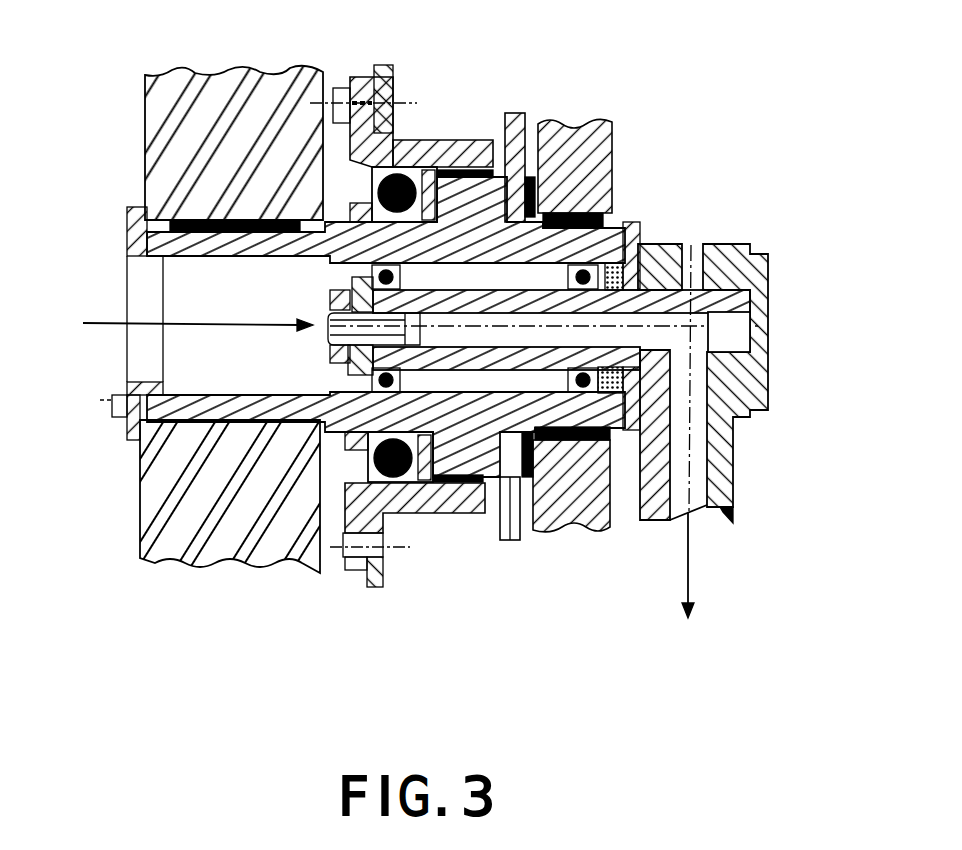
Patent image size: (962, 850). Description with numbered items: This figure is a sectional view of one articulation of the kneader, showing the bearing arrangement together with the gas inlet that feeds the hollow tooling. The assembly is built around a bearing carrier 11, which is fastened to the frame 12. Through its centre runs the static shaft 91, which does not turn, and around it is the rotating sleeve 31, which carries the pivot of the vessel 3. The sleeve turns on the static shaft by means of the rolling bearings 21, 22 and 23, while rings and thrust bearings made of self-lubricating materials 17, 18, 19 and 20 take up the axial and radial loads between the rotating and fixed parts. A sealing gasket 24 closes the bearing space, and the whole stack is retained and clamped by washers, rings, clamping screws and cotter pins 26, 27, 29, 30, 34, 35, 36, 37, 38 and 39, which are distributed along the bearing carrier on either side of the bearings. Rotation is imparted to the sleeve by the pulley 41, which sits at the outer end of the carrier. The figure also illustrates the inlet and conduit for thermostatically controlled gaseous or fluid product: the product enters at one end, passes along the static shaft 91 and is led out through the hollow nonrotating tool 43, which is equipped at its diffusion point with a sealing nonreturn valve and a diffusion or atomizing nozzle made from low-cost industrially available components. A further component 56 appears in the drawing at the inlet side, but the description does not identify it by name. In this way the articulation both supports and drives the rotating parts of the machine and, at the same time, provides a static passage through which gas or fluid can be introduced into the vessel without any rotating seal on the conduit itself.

The vessel 3 is at (510, 542).
The bearing carrier 11 is at (352, 558).
The frame 12 is at (375, 590).
The self-lubricating ring / thrust bearing 17 is at (632, 247).
The self-lubricating ring / thrust bearing 18 is at (517, 115).
The self-lubricating ring / thrust bearing 19 is at (462, 140).
The self-lubricating ring / thrust bearing 20 is at (427, 165).
The rolling bearing 21 is at (590, 262).
The rolling bearing 22 is at (376, 66).
The rolling bearing 23 is at (380, 268).
The sealing gasket 24 is at (620, 263).
The washer / ring / clamping screw / cotter pin 26 is at (760, 385).
The washer / ring / clamping screw / cotter pin 27 is at (757, 343).
The washer / ring / clamping screw / cotter pin 29 is at (340, 297).
The washer / ring / clamping screw / cotter pin 30 is at (355, 285).
The rotating sleeve 31 is at (613, 405).
The washer / ring / clamping screw / cotter pin 34 is at (557, 532).
The washer / ring / clamping screw / cotter pin 35 is at (557, 165).
The washer / ring / clamping screw / cotter pin 36 is at (103, 400).
The washer / ring / clamping screw / cotter pin 37 is at (130, 428).
The washer / ring / clamping screw / cotter pin 38 is at (220, 222).
The washer / ring / clamping screw / cotter pin 39 is at (343, 441).
The pulley 41 is at (178, 138).
The hollow nonrotating tool 43 is at (713, 470).
The gas inlet 56 is at (207, 325).
The static shaft 91 is at (638, 360).